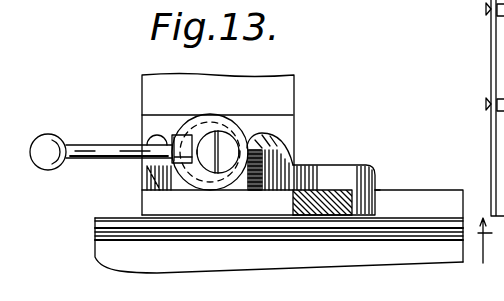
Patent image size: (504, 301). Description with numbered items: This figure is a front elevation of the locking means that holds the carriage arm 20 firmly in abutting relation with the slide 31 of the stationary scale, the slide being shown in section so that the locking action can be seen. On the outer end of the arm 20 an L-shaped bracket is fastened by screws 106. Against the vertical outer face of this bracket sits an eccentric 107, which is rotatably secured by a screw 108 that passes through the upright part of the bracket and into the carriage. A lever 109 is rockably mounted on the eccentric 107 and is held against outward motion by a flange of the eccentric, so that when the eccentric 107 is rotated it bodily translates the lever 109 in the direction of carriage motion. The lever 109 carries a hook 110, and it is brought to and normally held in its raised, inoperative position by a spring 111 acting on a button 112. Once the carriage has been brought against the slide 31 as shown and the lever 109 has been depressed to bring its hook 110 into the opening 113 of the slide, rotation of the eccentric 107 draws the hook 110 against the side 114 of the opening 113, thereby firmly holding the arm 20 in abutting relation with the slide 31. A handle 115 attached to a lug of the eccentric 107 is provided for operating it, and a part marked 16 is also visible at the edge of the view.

The arm 20 is at (157, 87).
The slide 31 is at (439, 198).
The screws 106 is at (153, 133).
The eccentric 107 is at (228, 106).
The screw 108 is at (228, 145).
The lever 109 is at (323, 178).
The hook 110 is at (376, 191).
The spring 111 is at (246, 188).
The button 112 is at (249, 190).
The opening 113 is at (442, 208).
The side 114 is at (352, 195).
The handle 115 is at (110, 160).
The column 16 is at (490, 143).